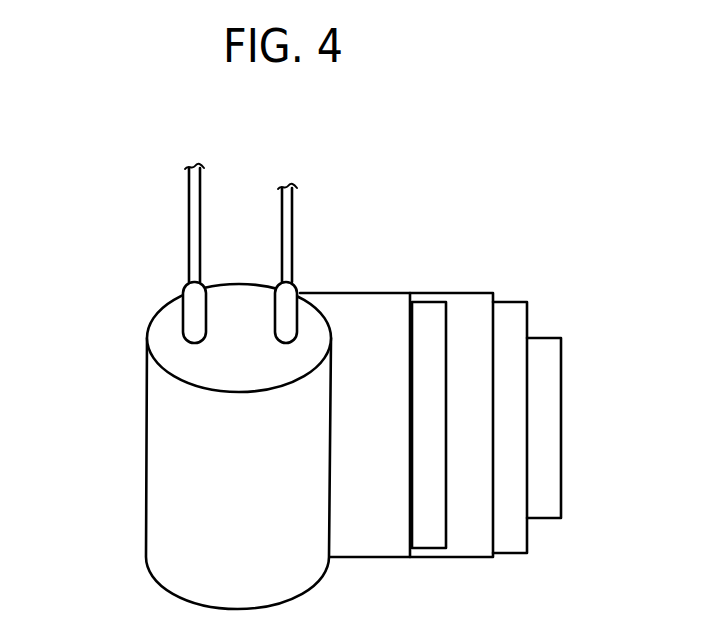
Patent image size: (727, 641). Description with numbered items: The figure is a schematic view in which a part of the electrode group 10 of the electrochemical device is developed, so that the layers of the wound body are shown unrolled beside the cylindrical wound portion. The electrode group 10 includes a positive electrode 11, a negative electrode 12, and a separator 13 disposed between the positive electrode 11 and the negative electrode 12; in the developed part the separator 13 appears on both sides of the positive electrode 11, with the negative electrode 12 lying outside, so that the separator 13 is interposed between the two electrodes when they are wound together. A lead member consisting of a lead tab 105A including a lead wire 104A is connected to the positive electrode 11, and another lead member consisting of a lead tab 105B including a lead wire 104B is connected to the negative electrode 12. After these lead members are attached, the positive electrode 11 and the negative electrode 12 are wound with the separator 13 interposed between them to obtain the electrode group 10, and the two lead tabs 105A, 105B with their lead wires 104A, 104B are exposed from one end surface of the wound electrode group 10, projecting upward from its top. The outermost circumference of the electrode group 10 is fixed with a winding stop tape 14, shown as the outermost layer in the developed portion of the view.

The electrode group 10 is at (458, 171).
The positive electrode 11 is at (425, 535).
The negative electrode 12 is at (508, 545).
The separator 13 is at (370, 540).
The winding stop tape 14 is at (542, 510).
The lead wire 104A is at (195, 201).
The lead wire 104B is at (288, 199).
The lead tab 105A is at (193, 291).
The lead tab 105B is at (291, 291).